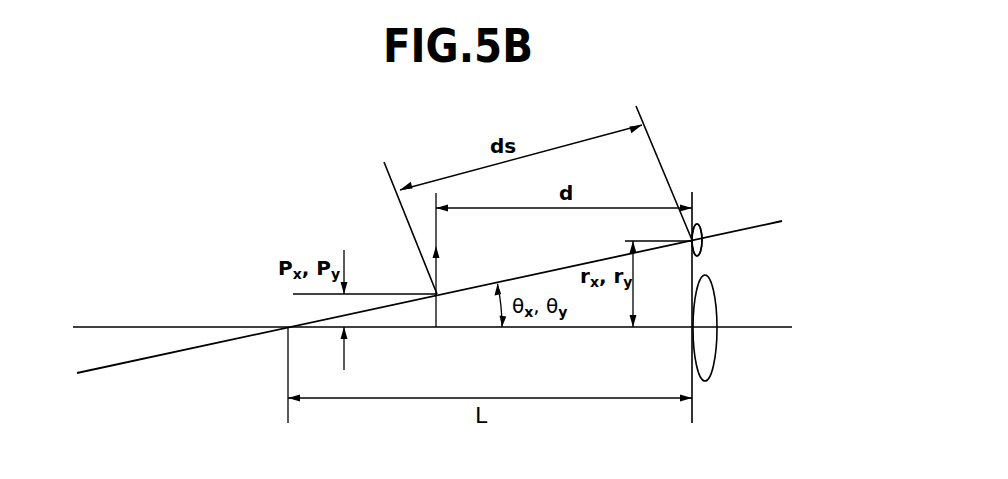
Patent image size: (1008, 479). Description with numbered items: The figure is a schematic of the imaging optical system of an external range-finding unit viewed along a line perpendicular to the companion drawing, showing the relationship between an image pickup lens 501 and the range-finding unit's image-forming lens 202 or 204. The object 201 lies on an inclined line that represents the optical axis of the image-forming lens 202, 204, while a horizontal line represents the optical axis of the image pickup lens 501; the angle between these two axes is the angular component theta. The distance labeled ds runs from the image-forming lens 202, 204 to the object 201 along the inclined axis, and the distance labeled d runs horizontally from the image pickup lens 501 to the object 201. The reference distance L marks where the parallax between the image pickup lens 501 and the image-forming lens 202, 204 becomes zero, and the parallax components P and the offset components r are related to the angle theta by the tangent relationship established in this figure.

The object 201 is at (437, 330).
The image-forming lens 202 is at (699, 235).
The image-forming lens 204 is at (699, 235).
The image pickup lens 501 is at (703, 351).